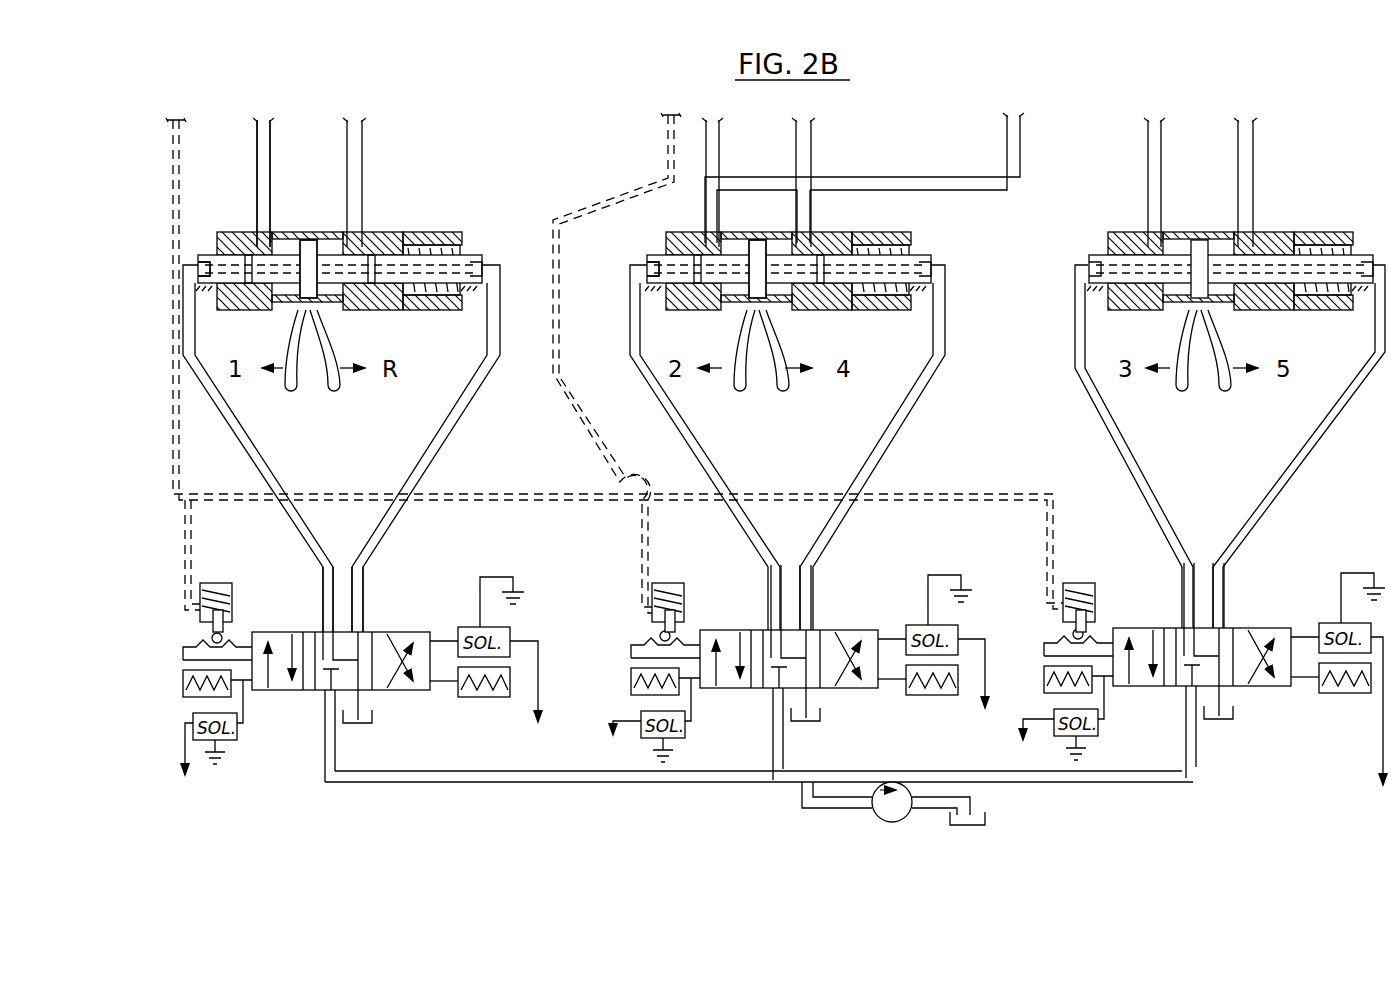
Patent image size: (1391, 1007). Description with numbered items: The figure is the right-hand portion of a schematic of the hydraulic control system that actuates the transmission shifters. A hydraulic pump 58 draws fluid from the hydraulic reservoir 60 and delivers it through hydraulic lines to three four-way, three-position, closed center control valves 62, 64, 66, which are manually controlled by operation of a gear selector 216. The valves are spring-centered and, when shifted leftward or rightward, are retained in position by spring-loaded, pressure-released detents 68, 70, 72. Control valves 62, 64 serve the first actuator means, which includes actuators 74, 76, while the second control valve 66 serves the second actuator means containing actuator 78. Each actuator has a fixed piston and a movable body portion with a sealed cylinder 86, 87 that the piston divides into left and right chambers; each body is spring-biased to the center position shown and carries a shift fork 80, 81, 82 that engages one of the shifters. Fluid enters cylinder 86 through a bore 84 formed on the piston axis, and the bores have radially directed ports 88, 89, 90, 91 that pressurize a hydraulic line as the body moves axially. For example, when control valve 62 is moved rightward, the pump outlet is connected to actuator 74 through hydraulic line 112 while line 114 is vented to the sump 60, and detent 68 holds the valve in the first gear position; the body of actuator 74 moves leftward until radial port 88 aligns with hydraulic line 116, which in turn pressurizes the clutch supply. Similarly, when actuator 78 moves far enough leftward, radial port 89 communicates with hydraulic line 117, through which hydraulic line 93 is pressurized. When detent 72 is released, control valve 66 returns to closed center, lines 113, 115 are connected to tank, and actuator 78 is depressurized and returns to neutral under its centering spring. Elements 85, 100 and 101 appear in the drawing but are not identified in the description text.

The hydraulic pump 58 is at (870, 818).
The hydraulic reservoir 60 is at (375, 722).
The control valve 62 is at (405, 630).
The control valve 64 is at (1252, 628).
The control valve 66 is at (853, 628).
The detent 68 is at (222, 585).
The detent 70 is at (1093, 592).
The detent 72 is at (672, 583).
The actuator 74 is at (440, 232).
The actuator 76 is at (1315, 230).
The actuator 78 is at (892, 232).
The shift fork 80 is at (340, 346).
The shift fork 81 is at (790, 346).
The shift fork 82 is at (1228, 344).
The bore 84 is at (200, 262).
The spool end 85 is at (647, 268).
The sealed cylinder 86 is at (306, 240).
The sealed cylinder 87 is at (755, 240).
The radial port 88 is at (247, 258).
The radial port 89 is at (700, 245).
The radial port 90 is at (372, 256).
The radial port 91 is at (822, 255).
The hydraulic line 93 is at (1025, 143).
The control line 100 is at (180, 180).
The control line 101 is at (680, 142).
The hydraulic line 112 is at (252, 448).
The hydraulic line 113 is at (700, 447).
The hydraulic line 114 is at (450, 430).
The hydraulic line 115 is at (892, 435).
The hydraulic line 116 is at (272, 186).
The hydraulic line 117 is at (705, 207).
The gear selector 216 is at (784, 723).